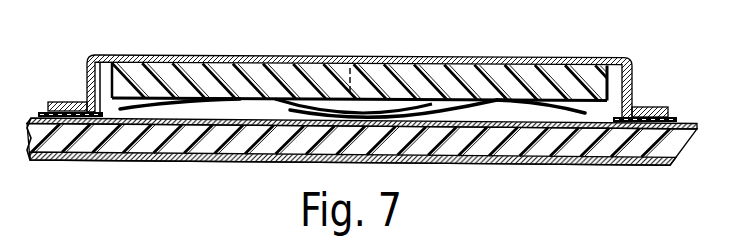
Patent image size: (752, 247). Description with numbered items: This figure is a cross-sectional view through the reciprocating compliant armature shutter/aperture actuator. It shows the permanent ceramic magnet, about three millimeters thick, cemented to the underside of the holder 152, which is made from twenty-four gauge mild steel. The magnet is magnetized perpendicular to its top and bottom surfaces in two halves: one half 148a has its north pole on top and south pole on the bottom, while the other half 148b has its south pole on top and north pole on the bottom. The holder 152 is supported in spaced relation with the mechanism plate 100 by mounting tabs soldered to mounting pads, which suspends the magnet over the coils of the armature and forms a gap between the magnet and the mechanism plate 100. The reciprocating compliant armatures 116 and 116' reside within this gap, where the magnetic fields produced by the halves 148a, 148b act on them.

The mechanism plate 100 is at (686, 146).
The armature 116 is at (430, 148).
The armature 116' is at (180, 146).
The half of magnet 148a is at (220, 76).
The half of magnet 148b is at (450, 78).
The holder 152 is at (303, 59).